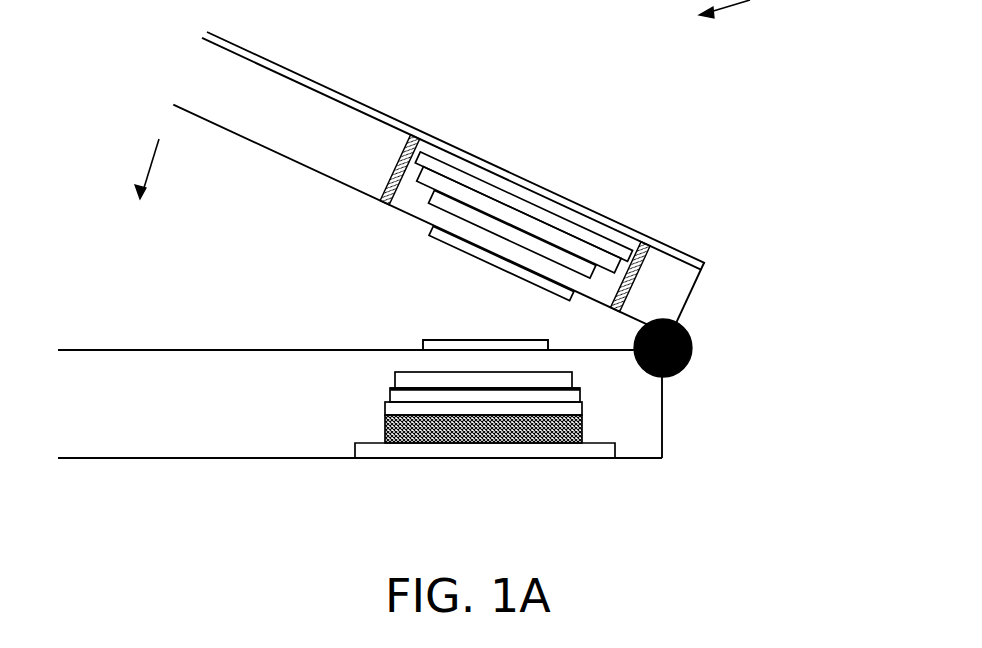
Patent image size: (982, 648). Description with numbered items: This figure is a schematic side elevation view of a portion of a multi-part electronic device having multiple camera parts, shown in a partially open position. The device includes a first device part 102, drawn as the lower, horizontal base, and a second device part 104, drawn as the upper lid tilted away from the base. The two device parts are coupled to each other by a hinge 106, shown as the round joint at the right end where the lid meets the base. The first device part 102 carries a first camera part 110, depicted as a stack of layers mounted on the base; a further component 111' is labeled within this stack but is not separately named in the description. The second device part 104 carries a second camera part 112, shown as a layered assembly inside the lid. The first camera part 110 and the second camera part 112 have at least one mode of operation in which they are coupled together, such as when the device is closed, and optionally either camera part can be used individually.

The first device part 102 is at (661, 412).
The second device part 104 is at (692, 297).
The hinge 106 is at (692, 352).
The first camera part 110 is at (420, 437).
The sensor layer 111' is at (483, 452).
The second camera part 112 is at (592, 228).